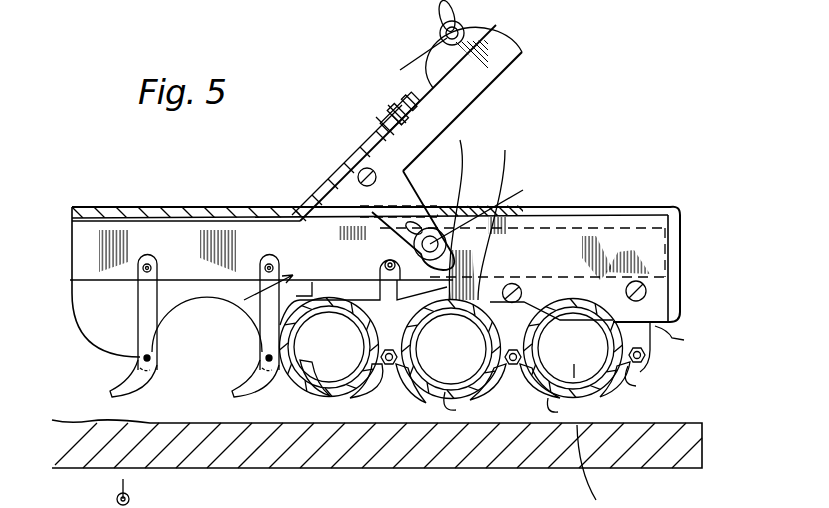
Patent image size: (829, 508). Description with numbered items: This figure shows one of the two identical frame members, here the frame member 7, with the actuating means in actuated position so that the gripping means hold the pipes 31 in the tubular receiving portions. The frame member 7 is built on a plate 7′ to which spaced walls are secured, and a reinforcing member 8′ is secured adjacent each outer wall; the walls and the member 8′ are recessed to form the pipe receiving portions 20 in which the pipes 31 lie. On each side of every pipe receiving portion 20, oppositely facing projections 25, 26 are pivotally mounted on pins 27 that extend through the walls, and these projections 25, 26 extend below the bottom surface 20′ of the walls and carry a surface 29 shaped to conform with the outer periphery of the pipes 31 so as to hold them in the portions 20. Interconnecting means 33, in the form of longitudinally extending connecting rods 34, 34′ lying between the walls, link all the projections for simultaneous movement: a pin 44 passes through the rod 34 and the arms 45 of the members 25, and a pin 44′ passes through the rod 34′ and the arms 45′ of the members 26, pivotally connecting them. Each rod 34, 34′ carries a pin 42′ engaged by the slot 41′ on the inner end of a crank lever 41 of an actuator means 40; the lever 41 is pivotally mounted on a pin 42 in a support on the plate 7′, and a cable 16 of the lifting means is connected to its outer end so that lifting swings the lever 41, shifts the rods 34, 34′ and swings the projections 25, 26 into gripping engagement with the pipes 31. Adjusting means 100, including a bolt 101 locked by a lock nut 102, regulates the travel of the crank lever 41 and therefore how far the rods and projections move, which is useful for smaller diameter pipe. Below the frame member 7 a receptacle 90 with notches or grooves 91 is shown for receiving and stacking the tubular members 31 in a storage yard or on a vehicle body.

The frame member 7 is at (670, 253).
The plate 7′ is at (262, 208).
The member 8′ is at (660, 237).
The cable 16 is at (441, 32).
The pipe receiving portion 20 is at (207, 300).
The bottom surface 20′ is at (456, 388).
The projection 25 is at (564, 415).
The projection 26 is at (130, 392).
The pin 27 is at (144, 358).
The surface 29 is at (451, 348).
The pipe 31 is at (515, 380).
The interconnecting means 33 is at (259, 292).
The connecting rod 34 is at (307, 289).
The connecting rod 34′ is at (277, 286).
The actuator means 40 is at (438, 110).
The crank lever 41 is at (471, 100).
The slot 41′ is at (426, 226).
The pin 42 is at (357, 172).
The pin 42′ is at (493, 206).
The pin 44 is at (388, 260).
The pin 44′ is at (152, 254).
The arm 45 is at (398, 157).
The arm 45′ is at (266, 264).
The receptacle 90 is at (640, 455).
The notch 91 is at (598, 466).
The adjusting means 100 is at (376, 81).
The bolt 101 is at (372, 114).
The lock nut 102 is at (400, 100).